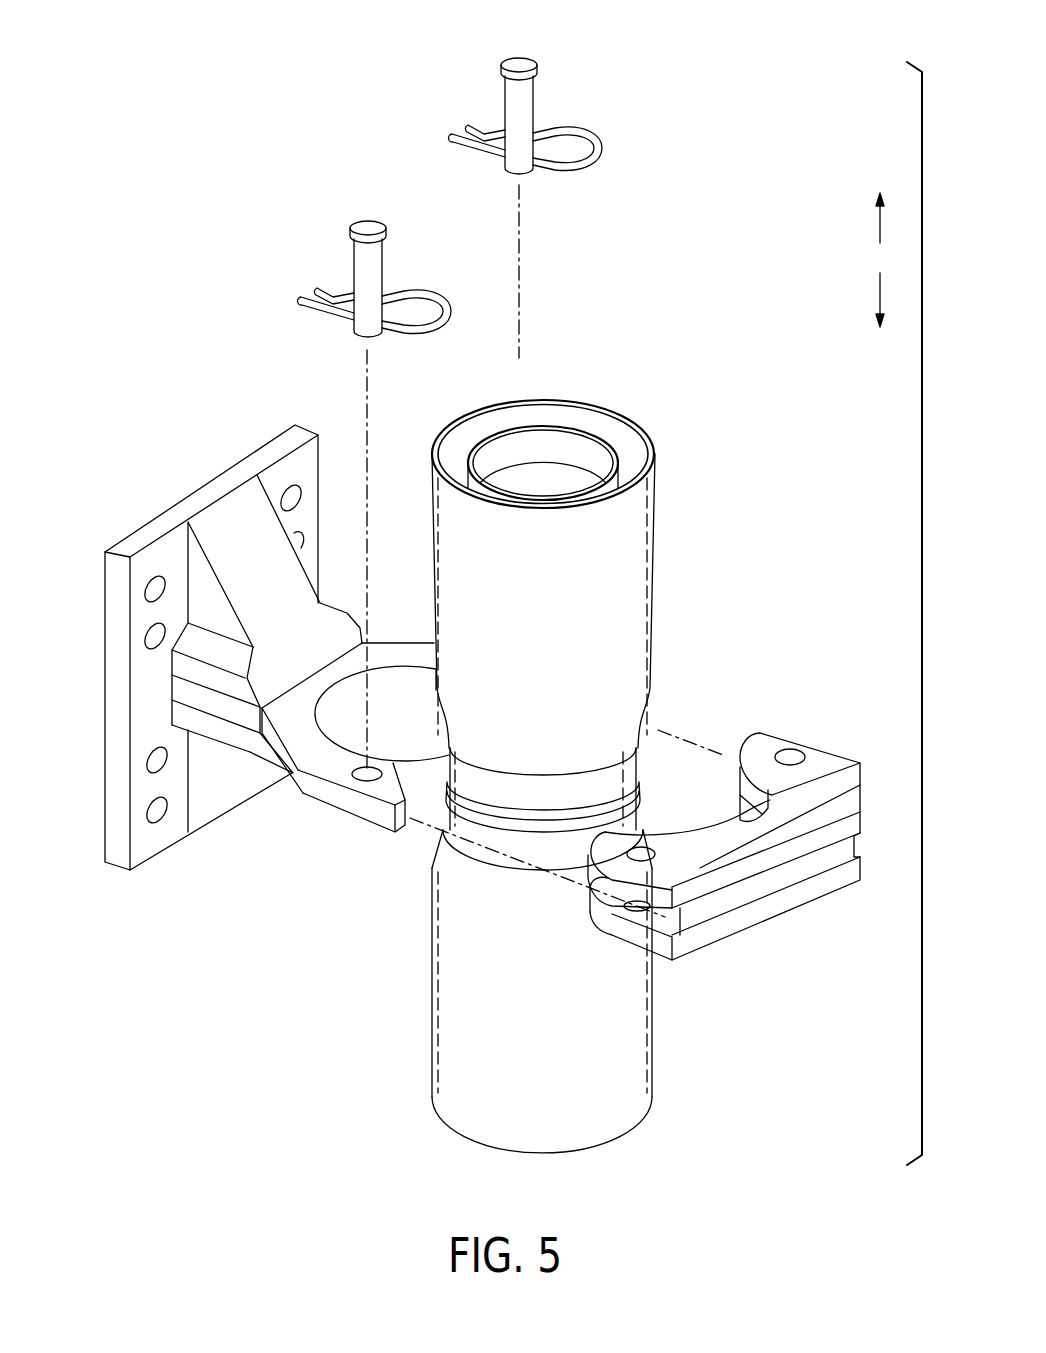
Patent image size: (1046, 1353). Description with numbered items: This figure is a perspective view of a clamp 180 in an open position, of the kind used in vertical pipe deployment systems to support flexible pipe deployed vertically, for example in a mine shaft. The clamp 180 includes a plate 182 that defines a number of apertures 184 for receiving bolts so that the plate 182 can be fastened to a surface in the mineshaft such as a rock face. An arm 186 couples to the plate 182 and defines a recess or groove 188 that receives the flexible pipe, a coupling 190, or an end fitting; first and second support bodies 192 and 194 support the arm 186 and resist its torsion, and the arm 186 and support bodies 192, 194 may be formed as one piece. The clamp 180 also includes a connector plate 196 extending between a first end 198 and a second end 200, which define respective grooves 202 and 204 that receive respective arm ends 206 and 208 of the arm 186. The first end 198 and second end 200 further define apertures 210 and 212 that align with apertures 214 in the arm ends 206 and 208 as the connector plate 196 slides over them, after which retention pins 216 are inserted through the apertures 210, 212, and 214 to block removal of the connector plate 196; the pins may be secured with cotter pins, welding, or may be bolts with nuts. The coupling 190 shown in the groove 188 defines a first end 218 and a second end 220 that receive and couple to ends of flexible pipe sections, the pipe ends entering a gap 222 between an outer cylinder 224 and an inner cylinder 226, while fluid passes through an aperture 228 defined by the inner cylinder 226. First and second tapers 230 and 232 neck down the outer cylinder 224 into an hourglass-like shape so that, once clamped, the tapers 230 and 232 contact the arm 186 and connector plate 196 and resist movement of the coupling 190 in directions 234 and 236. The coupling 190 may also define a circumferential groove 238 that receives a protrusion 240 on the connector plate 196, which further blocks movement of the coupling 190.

The clamp 180 is at (157, 410).
The plate 182 is at (118, 578).
The apertures 184 is at (300, 536).
The arm 186 is at (290, 770).
The groove 188 is at (335, 755).
The coupling 190 is at (623, 600).
The first support body 192 is at (205, 785).
The second support body 194 is at (233, 505).
The connector plate 196 is at (770, 860).
The first end 198 is at (606, 950).
The second end 200 is at (858, 742).
The groove 202 is at (688, 940).
The groove 204 is at (737, 797).
The arm end 206 is at (378, 818).
The arm end 208 is at (420, 617).
The aperture 210 is at (677, 858).
The aperture 212 is at (795, 720).
The apertures 214 is at (376, 773).
The retention pins 216 is at (512, 97).
The first end 218 is at (598, 390).
The second end 220 is at (452, 1138).
The gap 222 is at (627, 452).
The outer cylinder 224 is at (440, 440).
The inner cylinder 226 is at (522, 432).
The aperture 228 is at (543, 480).
The first taper 230 is at (570, 745).
The second taper 232 is at (458, 876).
The direction 234 is at (876, 222).
The direction 236 is at (876, 293).
The groove 238 is at (540, 818).
The protrusion 240 is at (793, 802).